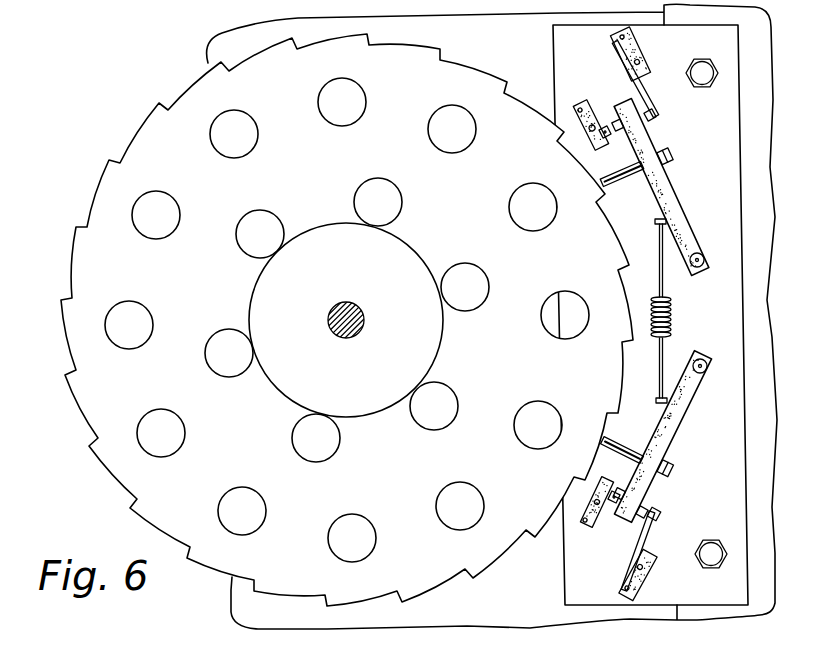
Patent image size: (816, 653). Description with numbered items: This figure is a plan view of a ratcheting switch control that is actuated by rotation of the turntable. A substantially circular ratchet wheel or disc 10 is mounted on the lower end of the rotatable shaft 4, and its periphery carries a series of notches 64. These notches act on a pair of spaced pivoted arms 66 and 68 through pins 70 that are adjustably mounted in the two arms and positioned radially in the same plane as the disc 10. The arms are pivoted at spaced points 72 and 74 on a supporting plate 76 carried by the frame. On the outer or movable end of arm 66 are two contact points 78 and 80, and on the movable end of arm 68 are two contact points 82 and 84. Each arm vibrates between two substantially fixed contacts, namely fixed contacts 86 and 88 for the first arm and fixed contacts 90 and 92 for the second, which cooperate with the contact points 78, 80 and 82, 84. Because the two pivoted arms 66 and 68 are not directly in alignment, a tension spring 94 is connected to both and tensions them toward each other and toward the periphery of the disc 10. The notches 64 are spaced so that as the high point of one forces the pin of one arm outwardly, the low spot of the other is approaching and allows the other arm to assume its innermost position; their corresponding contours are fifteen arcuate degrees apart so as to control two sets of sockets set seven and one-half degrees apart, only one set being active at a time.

The rotatable shaft 4 is at (360, 320).
The ratchet wheel or disc 10 is at (347, 320).
The notches 64 is at (166, 108).
The pivoted arm 66 is at (678, 413).
The pivoted arm 68 is at (670, 190).
The pins 70 is at (626, 181).
The pivot point 72 is at (702, 364).
The pivot point 74 is at (703, 263).
The supporting plate 76 is at (726, 104).
The contact point 78 is at (642, 518).
The contact point 80 is at (610, 506).
The contact point 82 is at (652, 118).
The contact point 84 is at (607, 127).
The fixed contact 86 is at (660, 514).
The fixed contact 88 is at (617, 493).
The fixed contact 90 is at (655, 112).
The fixed contact 92 is at (600, 126).
The tension spring 94 is at (669, 318).